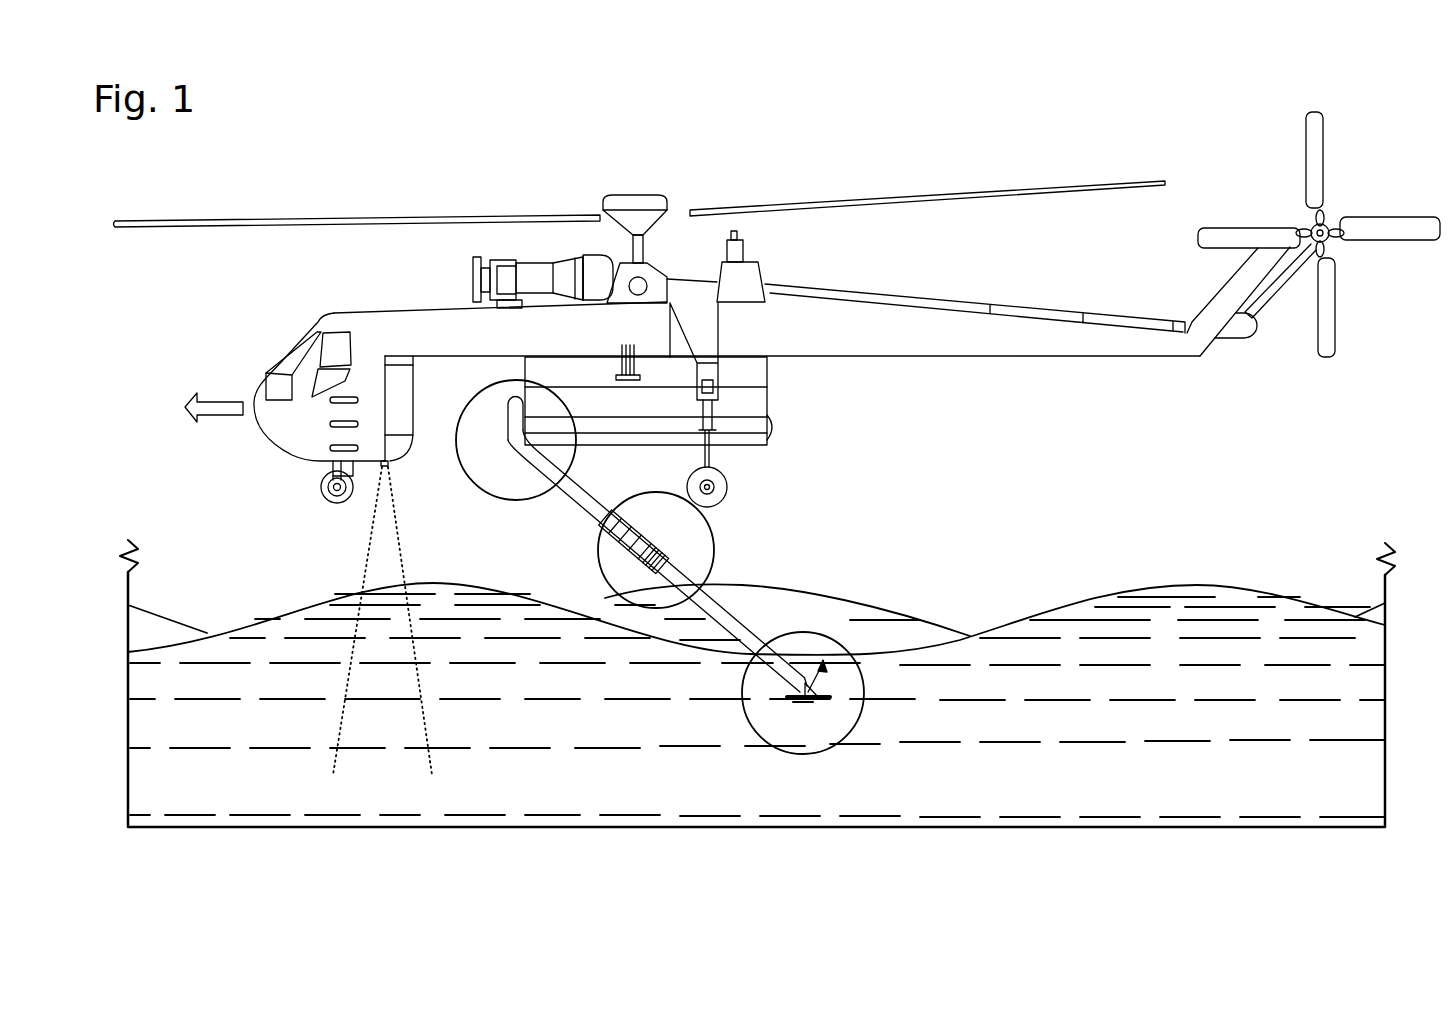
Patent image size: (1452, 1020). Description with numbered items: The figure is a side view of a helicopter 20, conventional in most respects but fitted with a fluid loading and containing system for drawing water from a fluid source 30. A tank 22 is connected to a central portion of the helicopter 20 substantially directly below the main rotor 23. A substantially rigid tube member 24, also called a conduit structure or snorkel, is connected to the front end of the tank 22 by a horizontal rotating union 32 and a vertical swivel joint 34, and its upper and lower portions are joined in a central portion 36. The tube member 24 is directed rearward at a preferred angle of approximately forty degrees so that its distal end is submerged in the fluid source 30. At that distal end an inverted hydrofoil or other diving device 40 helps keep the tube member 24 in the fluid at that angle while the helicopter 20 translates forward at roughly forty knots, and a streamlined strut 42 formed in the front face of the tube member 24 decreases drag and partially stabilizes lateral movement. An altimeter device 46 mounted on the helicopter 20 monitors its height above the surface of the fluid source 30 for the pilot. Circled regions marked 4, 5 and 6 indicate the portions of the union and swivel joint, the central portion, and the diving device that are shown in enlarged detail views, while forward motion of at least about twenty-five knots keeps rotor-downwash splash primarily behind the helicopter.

The helicopter 20 is at (947, 337).
The tank 22 is at (757, 397).
The main rotor 23 is at (878, 190).
The tube member 24 is at (743, 617).
The fluid source 30 is at (1050, 623).
The horizontal rotating union 32 is at (505, 428).
The vertical swivel joint 34 is at (525, 460).
The central portion 36 is at (657, 553).
The diving device 40 is at (798, 703).
The streamlined strut 42 is at (768, 676).
The altimeter device 46 is at (382, 466).
The detail view 4 region 4 is at (478, 381).
The detail view 5 region 5 is at (604, 497).
The detail view 6 region 6 is at (752, 645).